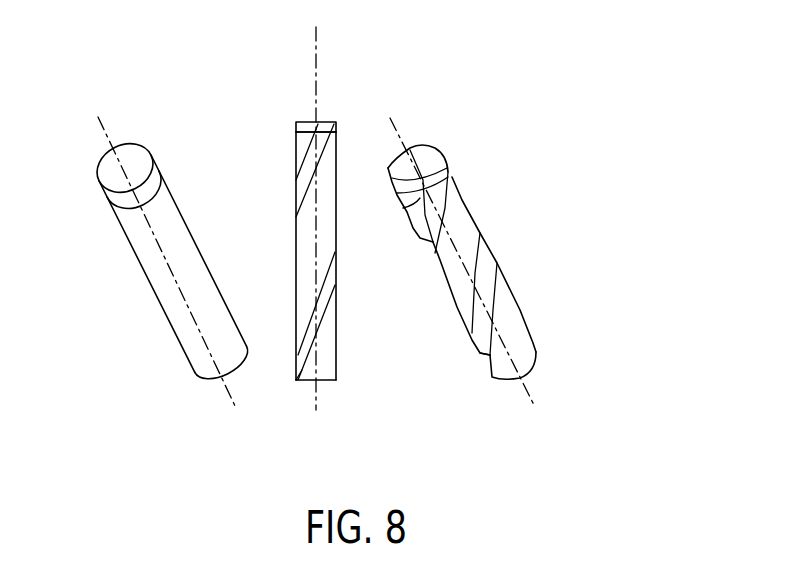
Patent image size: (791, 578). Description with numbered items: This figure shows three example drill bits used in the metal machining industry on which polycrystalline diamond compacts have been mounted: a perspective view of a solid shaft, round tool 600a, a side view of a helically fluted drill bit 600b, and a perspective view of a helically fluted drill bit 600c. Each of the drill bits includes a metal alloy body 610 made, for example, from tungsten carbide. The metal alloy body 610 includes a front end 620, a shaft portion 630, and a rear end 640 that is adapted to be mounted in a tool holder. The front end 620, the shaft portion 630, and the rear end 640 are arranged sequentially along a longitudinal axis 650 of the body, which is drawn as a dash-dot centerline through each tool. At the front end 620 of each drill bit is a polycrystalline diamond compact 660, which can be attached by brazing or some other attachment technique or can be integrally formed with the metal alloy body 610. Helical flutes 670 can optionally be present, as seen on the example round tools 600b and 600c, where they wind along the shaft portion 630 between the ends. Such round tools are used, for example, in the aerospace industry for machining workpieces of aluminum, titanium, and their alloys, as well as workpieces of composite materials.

The solid shaft round tool 600a is at (123, 362).
The helically fluted drill bit 600b is at (285, 120).
The helically fluted drill bit 600c is at (637, 115).
The metal alloy body 610 is at (175, 318).
The front end 620 is at (92, 210).
The shaft portion 630 is at (137, 290).
The rear end 640 is at (182, 363).
The longitudinal axis 650 is at (233, 393).
The polycrystalline diamond compact 660 is at (110, 170).
The helical flutes 670 is at (298, 382).